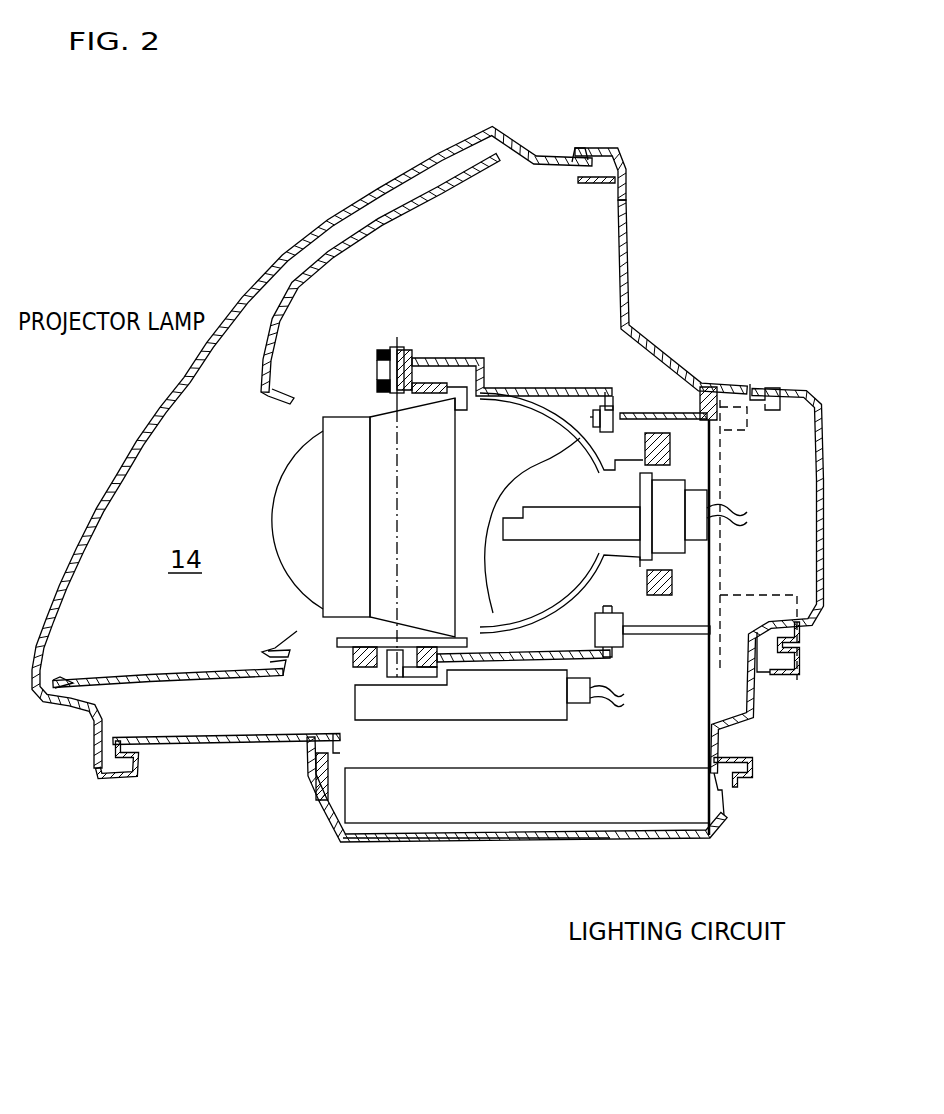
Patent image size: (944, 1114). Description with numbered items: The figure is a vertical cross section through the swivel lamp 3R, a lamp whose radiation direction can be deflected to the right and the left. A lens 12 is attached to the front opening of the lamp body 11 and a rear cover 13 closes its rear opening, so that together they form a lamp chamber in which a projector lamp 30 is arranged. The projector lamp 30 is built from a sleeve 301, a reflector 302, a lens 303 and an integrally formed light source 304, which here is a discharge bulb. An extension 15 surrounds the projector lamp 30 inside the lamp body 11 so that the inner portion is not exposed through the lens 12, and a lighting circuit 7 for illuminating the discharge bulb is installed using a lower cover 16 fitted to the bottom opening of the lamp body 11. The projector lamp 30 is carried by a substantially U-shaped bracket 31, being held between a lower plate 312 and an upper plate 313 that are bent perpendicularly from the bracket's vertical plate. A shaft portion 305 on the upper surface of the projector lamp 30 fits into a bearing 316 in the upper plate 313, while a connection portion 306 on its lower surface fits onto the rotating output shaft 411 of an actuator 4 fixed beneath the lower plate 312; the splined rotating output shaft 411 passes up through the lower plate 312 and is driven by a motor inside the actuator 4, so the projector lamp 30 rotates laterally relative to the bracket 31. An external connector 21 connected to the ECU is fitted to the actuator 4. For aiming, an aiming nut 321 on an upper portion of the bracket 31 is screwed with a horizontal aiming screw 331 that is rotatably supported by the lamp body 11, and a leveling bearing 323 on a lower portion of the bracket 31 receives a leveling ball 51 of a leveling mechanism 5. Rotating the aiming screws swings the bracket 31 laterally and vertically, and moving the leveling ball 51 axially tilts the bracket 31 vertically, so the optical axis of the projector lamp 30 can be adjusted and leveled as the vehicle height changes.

The swivel lamp 3R is at (555, 103).
The lens 12 is at (313, 247).
The lamp body 11 is at (632, 255).
The rear cover 13 is at (813, 413).
The extension 15 is at (235, 680).
The lower cover 16 is at (480, 840).
The projector lamp 30 is at (257, 490).
The sleeve 301 is at (445, 453).
The reflector 302 is at (537, 427).
The lens 303 is at (300, 560).
The light source 304 is at (555, 523).
The shaft portion 305 is at (385, 350).
The connection portion 306 is at (353, 650).
The upper plate 313 is at (460, 353).
The bearing 316 is at (407, 343).
The bracket 31 is at (613, 407).
The aiming nut 321 is at (623, 407).
The horizontal aiming screw 331 is at (700, 387).
The actuator 4 is at (370, 700).
The rotating output shaft 411 is at (400, 667).
The lower plate 312 is at (497, 663).
The external connector 21 is at (583, 693).
The leveling bearing 323 is at (630, 653).
The leveling ball 51 is at (670, 637).
The leveling mechanism 5 is at (772, 663).
The lighting circuit 7 is at (593, 810).